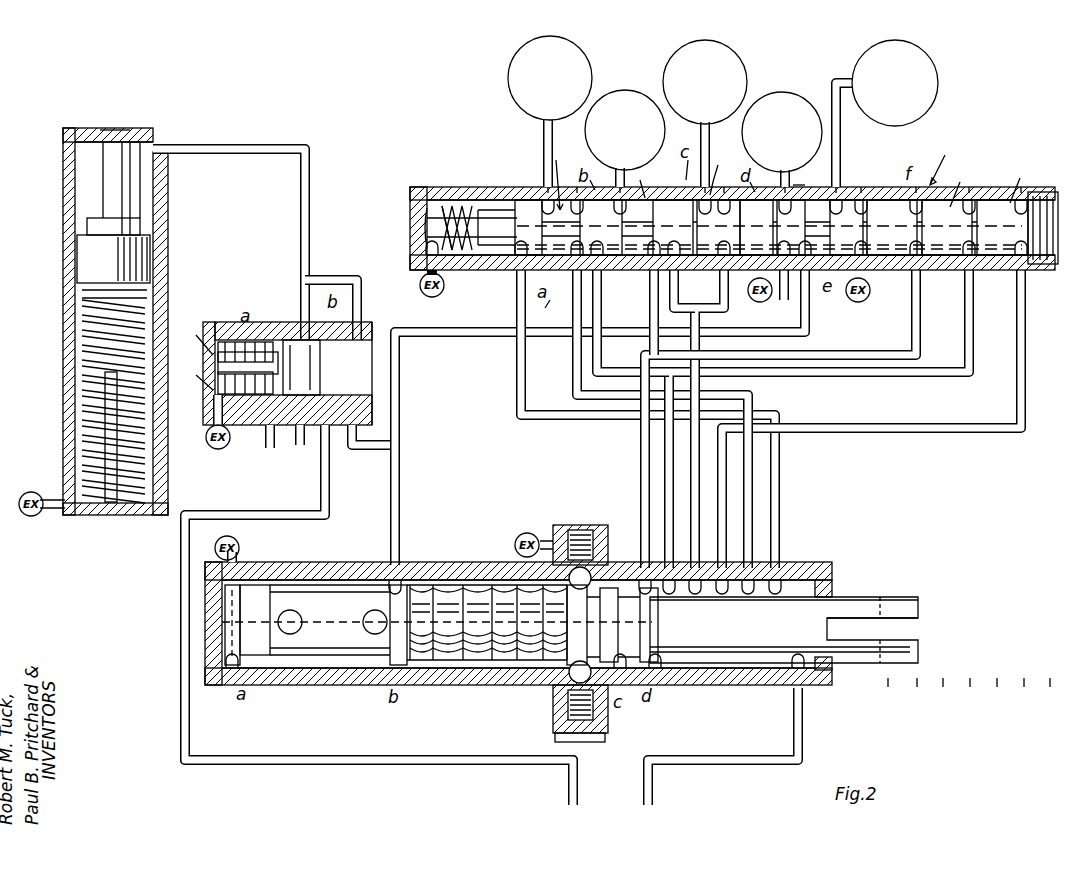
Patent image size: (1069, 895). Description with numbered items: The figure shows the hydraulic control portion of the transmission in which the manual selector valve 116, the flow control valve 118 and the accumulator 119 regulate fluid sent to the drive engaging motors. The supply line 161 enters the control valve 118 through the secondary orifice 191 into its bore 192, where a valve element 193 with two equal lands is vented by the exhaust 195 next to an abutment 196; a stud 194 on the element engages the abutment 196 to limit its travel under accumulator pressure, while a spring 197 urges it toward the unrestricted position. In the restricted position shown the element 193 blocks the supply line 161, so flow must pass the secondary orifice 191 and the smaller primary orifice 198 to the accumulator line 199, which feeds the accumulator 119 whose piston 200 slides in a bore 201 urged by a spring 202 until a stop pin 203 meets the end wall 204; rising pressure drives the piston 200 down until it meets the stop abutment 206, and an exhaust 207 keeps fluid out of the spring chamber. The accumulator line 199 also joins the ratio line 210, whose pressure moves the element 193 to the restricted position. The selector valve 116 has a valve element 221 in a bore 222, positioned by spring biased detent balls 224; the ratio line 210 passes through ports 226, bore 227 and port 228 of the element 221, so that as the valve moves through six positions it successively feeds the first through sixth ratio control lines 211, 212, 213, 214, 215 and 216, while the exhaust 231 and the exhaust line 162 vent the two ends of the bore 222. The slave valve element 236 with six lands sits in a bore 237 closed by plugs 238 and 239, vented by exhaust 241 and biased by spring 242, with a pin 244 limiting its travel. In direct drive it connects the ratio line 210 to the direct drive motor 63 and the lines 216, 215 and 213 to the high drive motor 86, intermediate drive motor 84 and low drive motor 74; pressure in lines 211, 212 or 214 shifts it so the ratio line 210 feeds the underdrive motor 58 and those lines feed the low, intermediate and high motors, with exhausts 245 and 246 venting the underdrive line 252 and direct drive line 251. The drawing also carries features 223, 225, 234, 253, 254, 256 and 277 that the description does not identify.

The underdrive motor 58 is at (916, 56).
The direct drive motor 63 is at (785, 105).
The low drive motor 74 is at (730, 48).
The intermediate drive motor 84 is at (632, 97).
The high drive motor 86 is at (518, 55).
The manual selector valve 116 is at (892, 592).
The flow control valve 118 is at (212, 322).
The accumulator 119 is at (170, 222).
The supply line 161 is at (275, 520).
The exhaust line 162 is at (655, 797).
The secondary orifice 191 is at (326, 458).
The bore 192 is at (270, 437).
The valve element 193 is at (300, 344).
The stud 194 is at (215, 348).
The exhaust 195 is at (220, 450).
The abutment 196 is at (214, 386).
The spring 197 is at (230, 340).
The primary orifice 198 is at (300, 434).
The accumulator line 199 is at (303, 238).
The piston 200 is at (92, 262).
The bore 201 is at (78, 297).
The spring 202 is at (80, 351).
The stop pin 203 is at (103, 178).
The end wall 204 is at (135, 130).
The stop abutment 206 is at (120, 470).
The exhaust 207 is at (33, 516).
The ratio line 210 is at (400, 437).
The first ratio control line 211 is at (643, 509).
The second ratio control line 212 is at (668, 476).
The third ratio control line 213 is at (691, 443).
The fourth ratio control line 214 is at (725, 440).
The fifth ratio control line 215 is at (756, 513).
The sixth ratio control line 216 is at (548, 314).
The valve element 221 is at (837, 608).
The bore 222 is at (328, 663).
The bellows 223 is at (470, 668).
The detent balls 224 is at (553, 688).
The relief valve 225 is at (532, 542).
The ports 226 is at (300, 628).
The bore 227 is at (325, 587).
The port 228 is at (650, 628).
The exhaust 231 is at (245, 549).
The valve land 234 is at (656, 176).
The slave valve element 236 is at (574, 178).
The bore 237 is at (854, 197).
The plug 238 is at (961, 185).
The plug 239 is at (1016, 181).
The exhaust 241 is at (450, 300).
The spring 242 is at (455, 200).
The pin 244 is at (485, 200).
The exhaust 245 is at (862, 302).
The exhaust 246 is at (777, 286).
The direct drive line 251 is at (804, 179).
The underdrive line 252 is at (841, 140).
The servo line 253 is at (727, 169).
The servo line 254 is at (626, 174).
The servo line 256 is at (544, 141).
The shift valve spool 277 is at (955, 160).